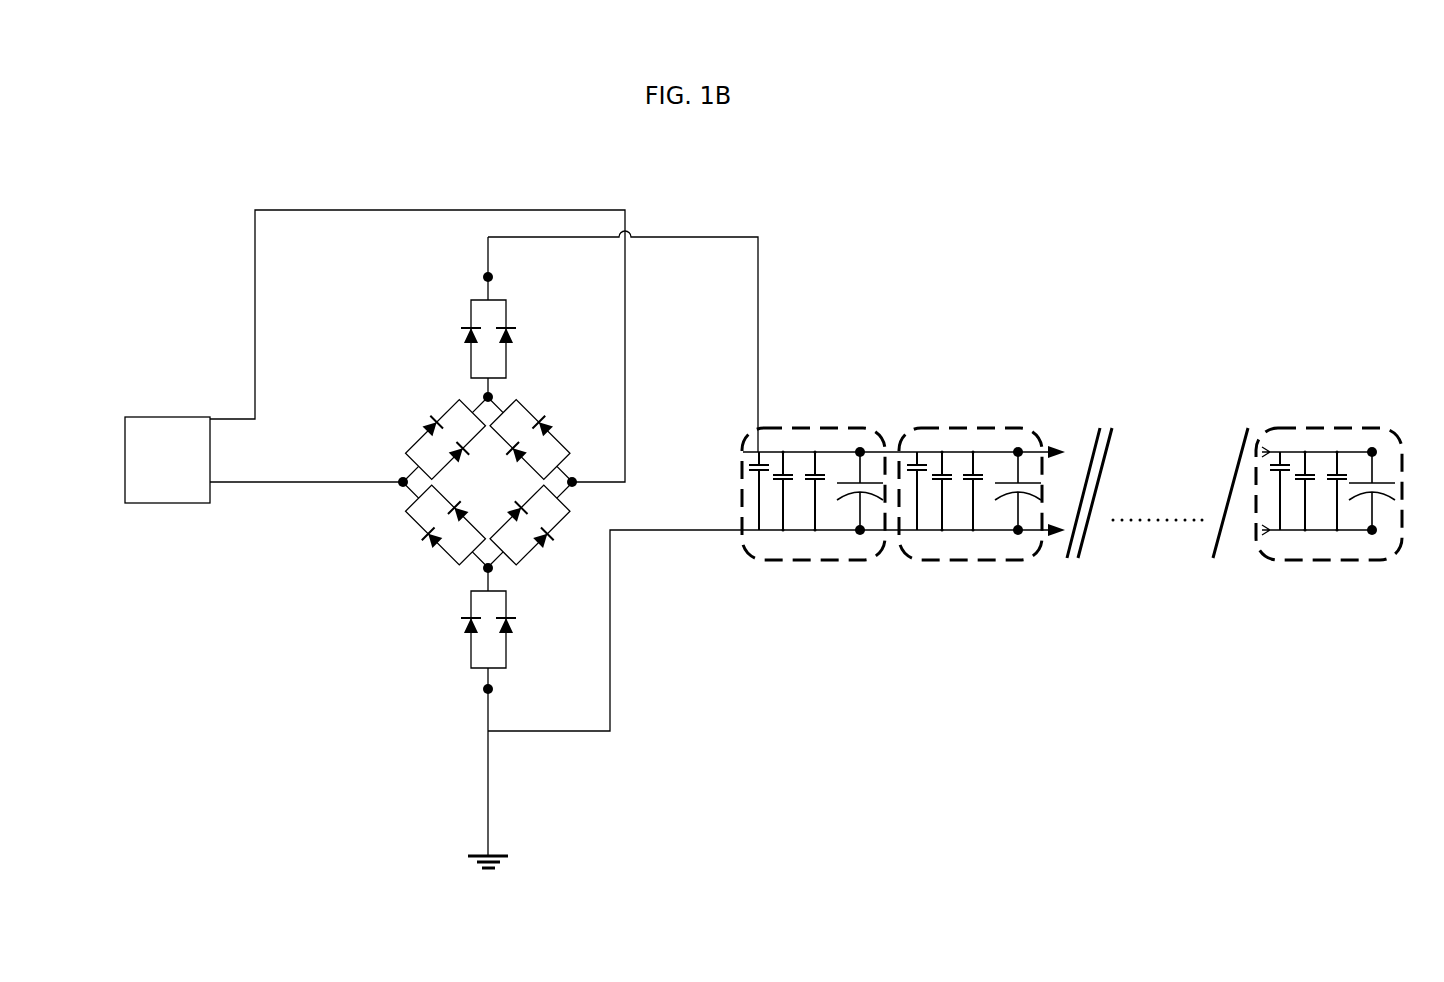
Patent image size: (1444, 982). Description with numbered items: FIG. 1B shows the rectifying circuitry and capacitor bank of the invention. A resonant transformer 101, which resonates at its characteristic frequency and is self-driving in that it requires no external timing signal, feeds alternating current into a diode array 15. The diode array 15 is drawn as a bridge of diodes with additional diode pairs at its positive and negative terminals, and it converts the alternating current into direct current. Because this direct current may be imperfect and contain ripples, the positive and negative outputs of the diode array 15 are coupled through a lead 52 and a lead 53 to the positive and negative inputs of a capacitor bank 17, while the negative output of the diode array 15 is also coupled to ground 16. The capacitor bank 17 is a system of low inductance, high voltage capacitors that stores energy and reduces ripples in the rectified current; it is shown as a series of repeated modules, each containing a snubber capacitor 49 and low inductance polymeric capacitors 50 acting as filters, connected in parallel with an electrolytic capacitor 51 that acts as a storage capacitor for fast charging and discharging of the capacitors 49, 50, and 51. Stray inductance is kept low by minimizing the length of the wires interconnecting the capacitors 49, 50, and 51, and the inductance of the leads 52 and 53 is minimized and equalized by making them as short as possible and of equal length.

The diode array 15 is at (610, 198).
The resonant transformer 101 is at (167, 479).
The lead 52 is at (722, 236).
The lead 53 is at (612, 657).
The ground 16 is at (505, 778).
The capacitor bank 17 is at (742, 560).
The snubber capacitor 49 is at (760, 453).
The low inductance polymeric capacitor 50 is at (793, 457).
The electrolytic capacitor 51 is at (866, 474).